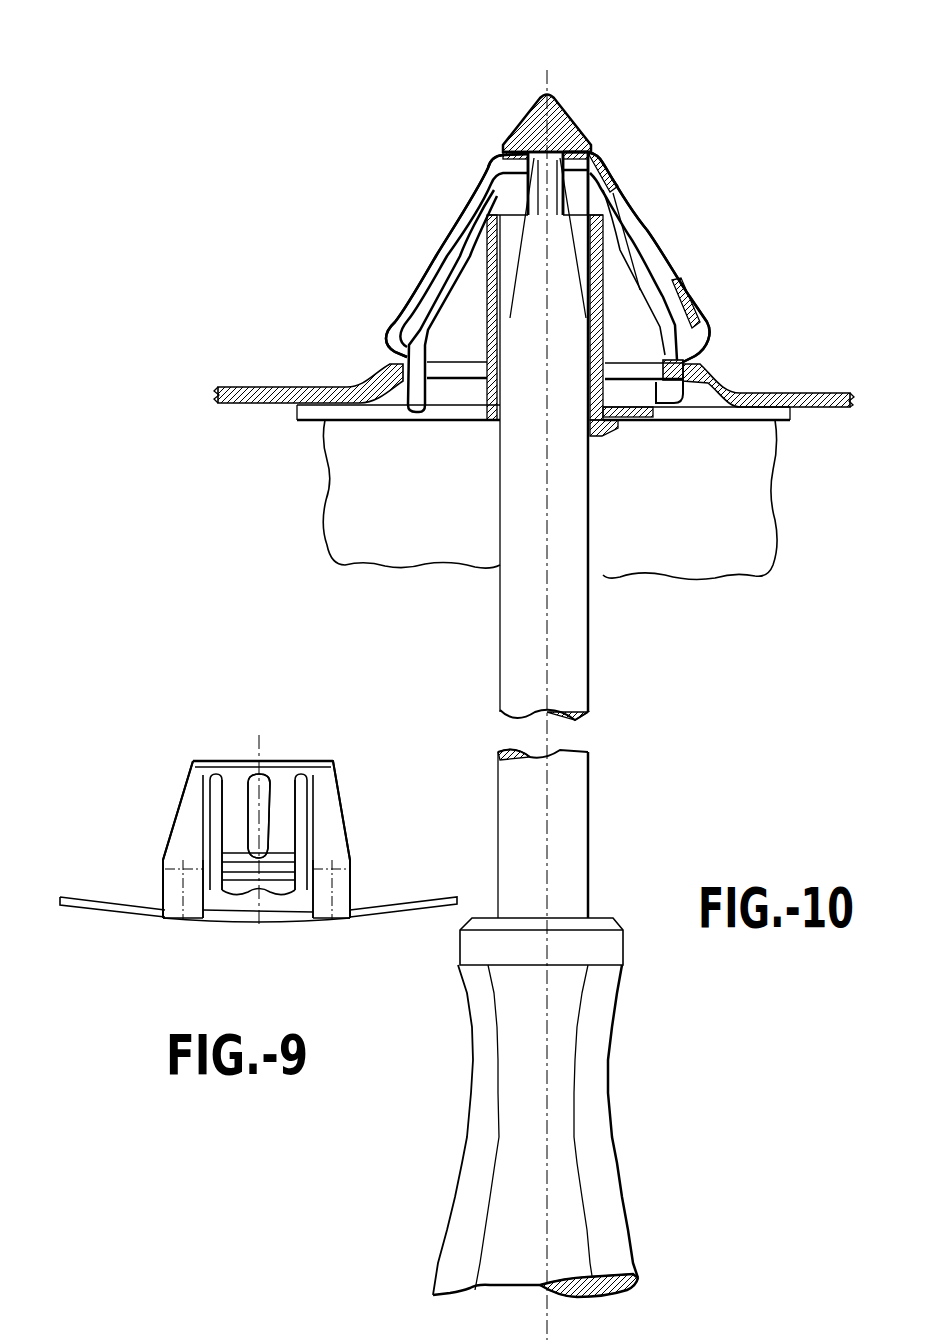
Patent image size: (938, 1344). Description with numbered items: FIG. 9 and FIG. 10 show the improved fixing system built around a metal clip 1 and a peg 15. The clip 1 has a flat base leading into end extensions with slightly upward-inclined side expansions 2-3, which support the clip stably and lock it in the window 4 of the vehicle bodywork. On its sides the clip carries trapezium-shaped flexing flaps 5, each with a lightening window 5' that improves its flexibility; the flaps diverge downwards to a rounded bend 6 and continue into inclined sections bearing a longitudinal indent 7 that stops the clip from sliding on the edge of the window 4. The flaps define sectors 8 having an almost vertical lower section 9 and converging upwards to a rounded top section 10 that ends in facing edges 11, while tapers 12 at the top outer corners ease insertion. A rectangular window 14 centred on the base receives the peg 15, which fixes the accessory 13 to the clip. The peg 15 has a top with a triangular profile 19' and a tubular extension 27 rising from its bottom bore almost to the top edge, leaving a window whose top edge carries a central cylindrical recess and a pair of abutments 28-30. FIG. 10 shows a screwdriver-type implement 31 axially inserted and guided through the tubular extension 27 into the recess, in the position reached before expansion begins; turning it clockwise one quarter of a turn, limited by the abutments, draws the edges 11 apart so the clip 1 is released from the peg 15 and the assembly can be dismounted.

In FIG. 10, the metal clip 1 is at (722, 208).
In FIG. 9, the metal clip 1 is at (112, 738).
In FIG. 10, the end extensions with side expansions 2-3 is at (715, 410).
In FIG. 9, the end extensions with side expansions 2-3 is at (403, 902).
In FIG. 10, the window 4 is at (403, 363).
In FIG. 10, the flexing flaps 5 is at (585, 291).
In FIG. 9, the flexing flaps 5 is at (288, 789).
In FIG. 10, the lightening windows 5' is at (653, 215).
In FIG. 9, the lightening windows 5' is at (276, 787).
In FIG. 10, the rounded bend 6 is at (707, 335).
In FIG. 10, the longitudinal indent 7 is at (700, 357).
In FIG. 10, the sectors 8 is at (420, 328).
In FIG. 9, the sectors 8 is at (183, 820).
In FIG. 9, the lower section 9 is at (183, 897).
In FIG. 9, the top section 10 is at (242, 760).
In FIG. 10, the facing edges 11 is at (515, 187).
In FIG. 9, the tapers 12 is at (188, 762).
In FIG. 10, the accessory 13 is at (380, 527).
In FIG. 10, the rectangular window 14 is at (620, 427).
In FIG. 10, the peg 15 is at (493, 103).
In FIG. 10, the triangular profile 19' is at (609, 85).
In FIG. 10, the tubular extension 27 is at (487, 305).
In FIG. 10, the window with central cylindrical recess and abutments 28-30 is at (567, 190).
In FIG. 10, the implement 31 is at (557, 665).